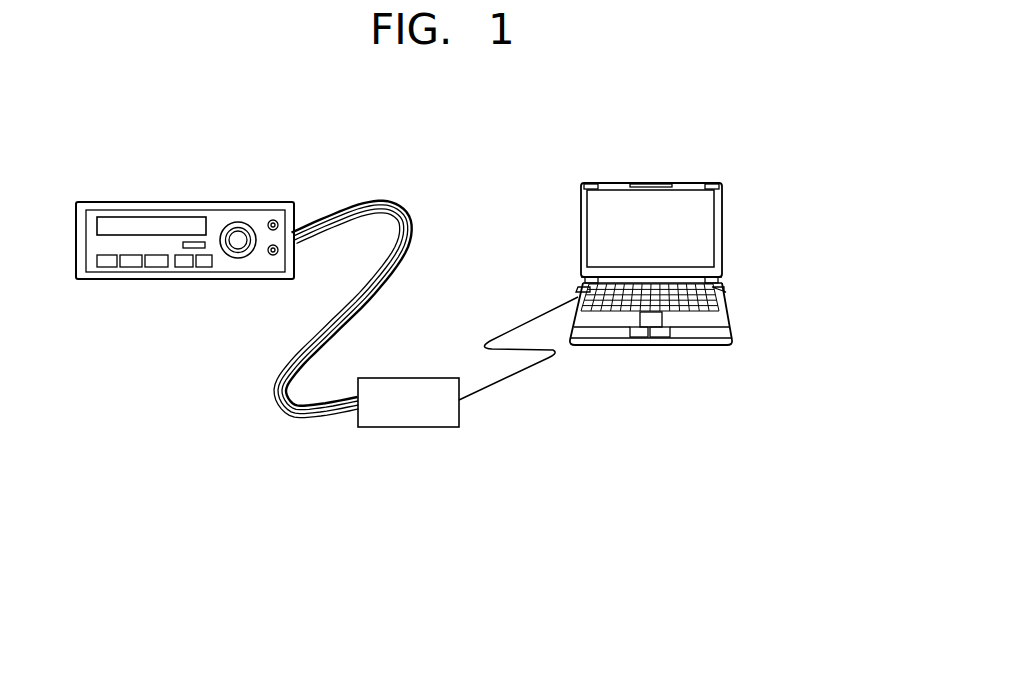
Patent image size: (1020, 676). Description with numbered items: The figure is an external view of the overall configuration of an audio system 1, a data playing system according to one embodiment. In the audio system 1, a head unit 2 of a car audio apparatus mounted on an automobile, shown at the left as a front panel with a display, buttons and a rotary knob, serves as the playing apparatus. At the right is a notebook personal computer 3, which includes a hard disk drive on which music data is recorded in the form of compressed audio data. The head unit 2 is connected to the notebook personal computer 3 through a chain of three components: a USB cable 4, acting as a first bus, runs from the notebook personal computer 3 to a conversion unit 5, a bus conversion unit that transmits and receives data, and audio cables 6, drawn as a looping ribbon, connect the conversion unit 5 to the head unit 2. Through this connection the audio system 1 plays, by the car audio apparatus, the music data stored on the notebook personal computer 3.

The audio system 1 is at (352, 490).
The head unit 2 is at (176, 201).
The notebook personal computer 3 is at (688, 350).
The USB cable 4 is at (527, 318).
The conversion unit 5 is at (444, 428).
The audio cables 6 is at (378, 201).